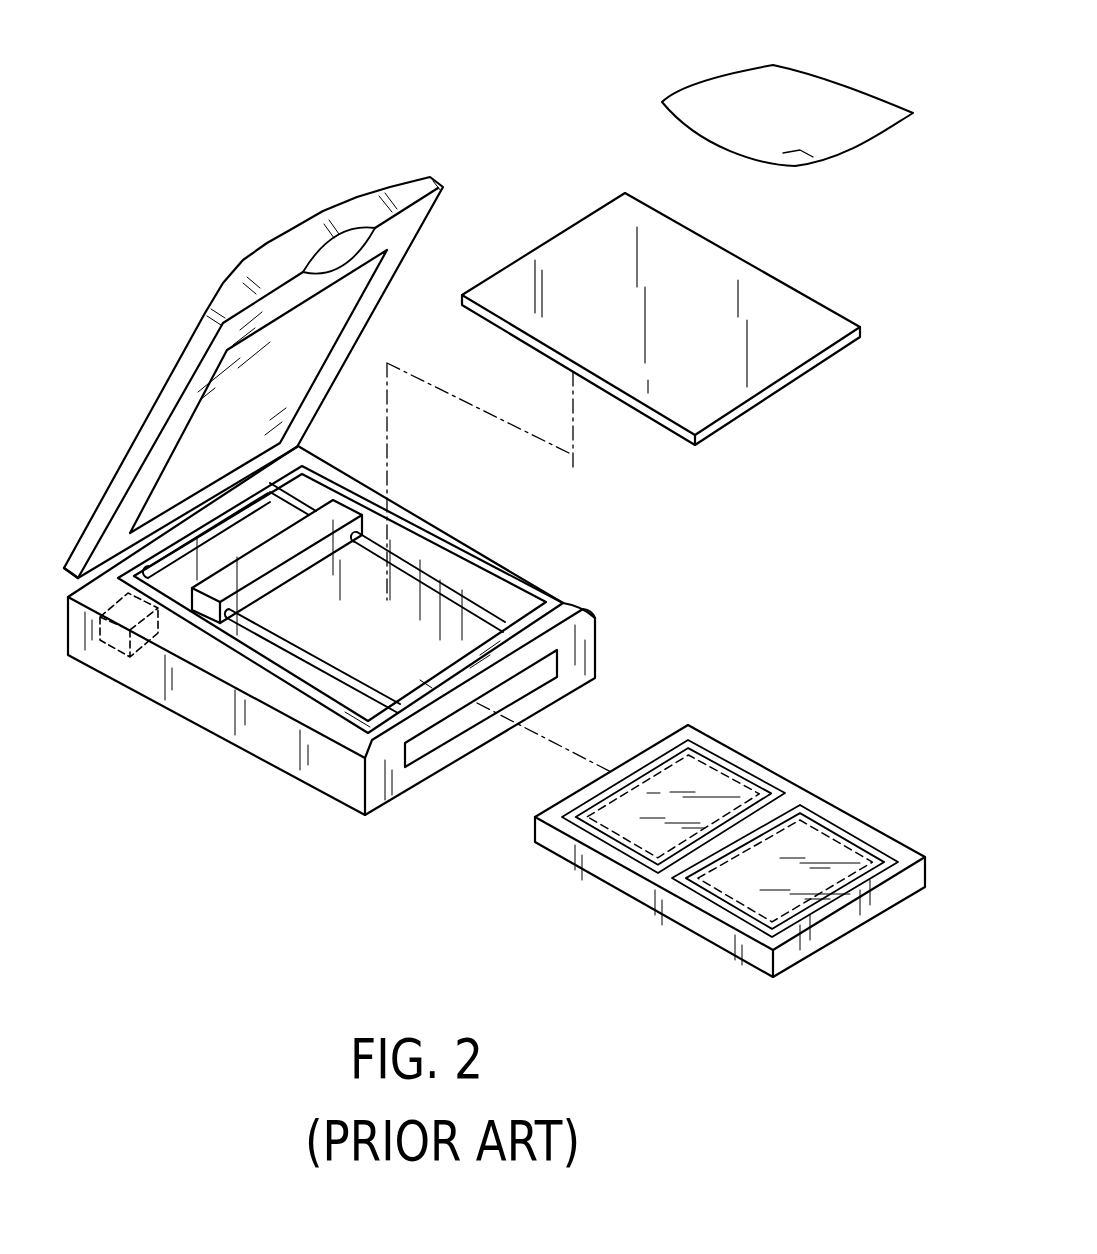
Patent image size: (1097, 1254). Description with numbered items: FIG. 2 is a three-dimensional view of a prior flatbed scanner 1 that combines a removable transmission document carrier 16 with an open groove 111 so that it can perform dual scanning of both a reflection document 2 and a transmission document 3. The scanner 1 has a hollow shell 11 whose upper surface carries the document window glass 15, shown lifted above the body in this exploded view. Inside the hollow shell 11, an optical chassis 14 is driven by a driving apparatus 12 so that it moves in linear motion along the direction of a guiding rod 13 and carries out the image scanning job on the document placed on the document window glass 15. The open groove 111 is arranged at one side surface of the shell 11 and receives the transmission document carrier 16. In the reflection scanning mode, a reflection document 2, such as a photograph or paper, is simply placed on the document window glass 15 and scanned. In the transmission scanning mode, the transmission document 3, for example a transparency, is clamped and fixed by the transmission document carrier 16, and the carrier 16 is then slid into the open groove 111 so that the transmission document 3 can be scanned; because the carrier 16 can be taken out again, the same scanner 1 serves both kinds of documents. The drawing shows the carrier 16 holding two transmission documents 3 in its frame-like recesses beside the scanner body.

The scanner 1 is at (390, 496).
The reflection document 2 is at (787, 82).
The transmission document 3 is at (710, 757).
The shell 11 is at (392, 630).
The open groove 111 is at (557, 660).
The driving apparatus 12 is at (117, 638).
The guiding rod 13 is at (423, 563).
The optical chassis 14 is at (333, 510).
The document window glass 15 is at (713, 247).
The transmission document carrier 16 is at (730, 822).